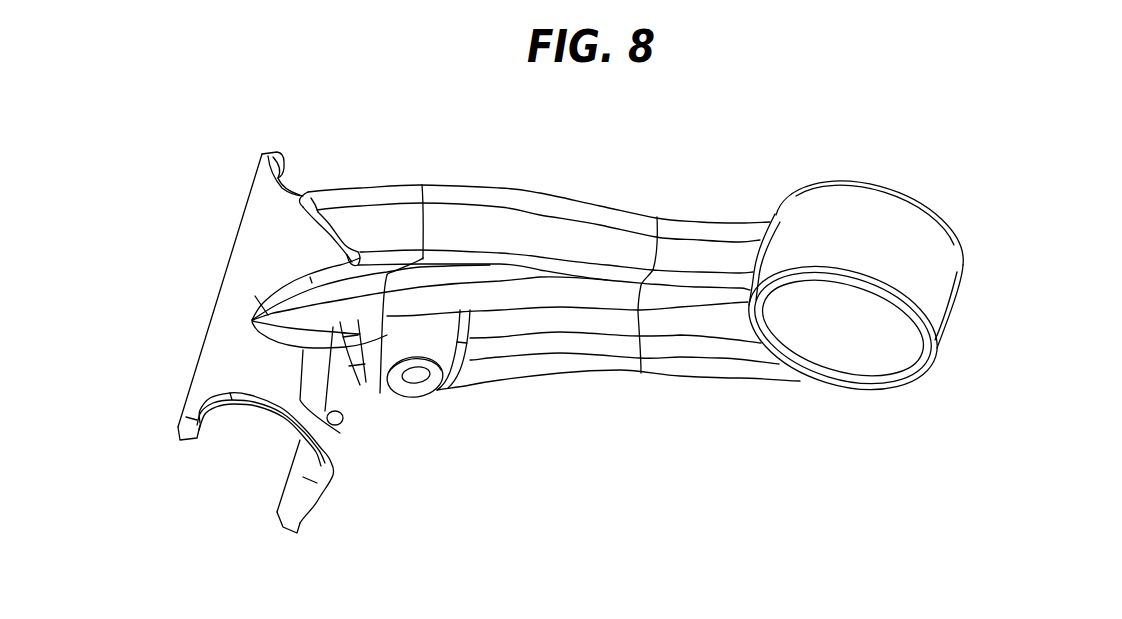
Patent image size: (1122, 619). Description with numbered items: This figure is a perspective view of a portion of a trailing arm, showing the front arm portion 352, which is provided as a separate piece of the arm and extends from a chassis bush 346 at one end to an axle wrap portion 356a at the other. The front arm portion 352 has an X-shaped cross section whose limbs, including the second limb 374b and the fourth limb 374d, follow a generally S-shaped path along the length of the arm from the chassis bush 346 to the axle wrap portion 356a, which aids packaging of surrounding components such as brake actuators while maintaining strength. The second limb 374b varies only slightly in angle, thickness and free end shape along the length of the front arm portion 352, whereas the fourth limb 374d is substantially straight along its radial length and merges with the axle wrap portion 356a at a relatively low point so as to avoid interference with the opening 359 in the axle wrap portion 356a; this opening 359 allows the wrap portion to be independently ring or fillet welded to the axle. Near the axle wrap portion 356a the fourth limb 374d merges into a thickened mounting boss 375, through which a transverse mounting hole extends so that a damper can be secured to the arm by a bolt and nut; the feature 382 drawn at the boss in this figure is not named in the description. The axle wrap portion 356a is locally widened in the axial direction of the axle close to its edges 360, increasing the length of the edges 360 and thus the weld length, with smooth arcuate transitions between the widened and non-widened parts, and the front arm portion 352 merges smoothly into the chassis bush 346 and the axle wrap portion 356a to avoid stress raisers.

The chassis bush 346 is at (860, 358).
The front arm portion 352 is at (706, 208).
The axle wrap portion 356a is at (281, 194).
The opening 359 is at (336, 413).
The edges 360 is at (237, 232).
The second limb 374b is at (487, 196).
The fourth limb 374d is at (553, 372).
The mounting boss 375 is at (438, 392).
The aperture 382 is at (410, 380).